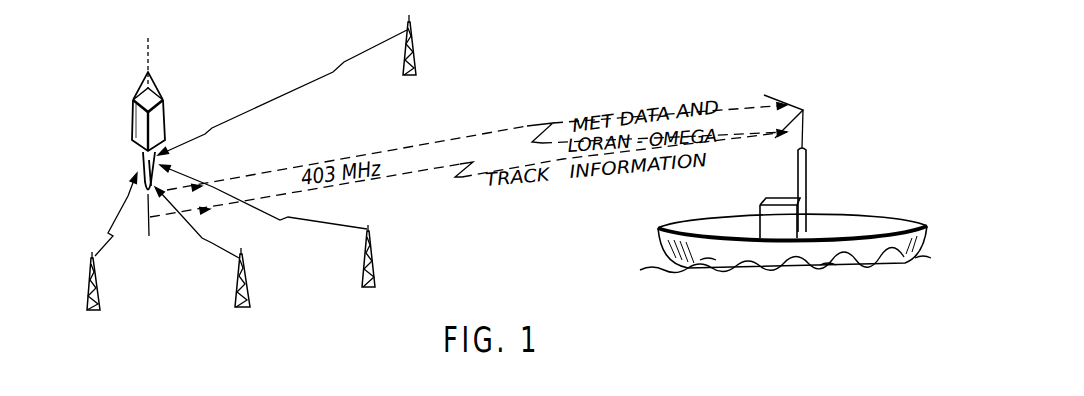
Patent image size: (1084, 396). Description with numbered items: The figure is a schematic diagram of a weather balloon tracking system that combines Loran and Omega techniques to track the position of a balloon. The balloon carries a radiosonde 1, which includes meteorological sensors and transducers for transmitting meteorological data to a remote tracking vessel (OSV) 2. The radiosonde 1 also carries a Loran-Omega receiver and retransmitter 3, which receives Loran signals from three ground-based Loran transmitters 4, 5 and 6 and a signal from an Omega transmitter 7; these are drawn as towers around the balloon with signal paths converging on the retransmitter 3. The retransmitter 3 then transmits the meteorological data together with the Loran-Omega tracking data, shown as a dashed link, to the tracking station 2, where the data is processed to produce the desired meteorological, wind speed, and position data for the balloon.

The radiosonde 1 is at (137, 124).
The tracking vessel (OSV) 2 is at (847, 257).
The Loran-Omega receiver and retransmitter 3 is at (146, 157).
The Loran transmitter 4 is at (88, 308).
The Loran transmitter 5 is at (378, 284).
The Loran transmitter 6 is at (415, 66).
The Omega transmitter 7 is at (236, 297).